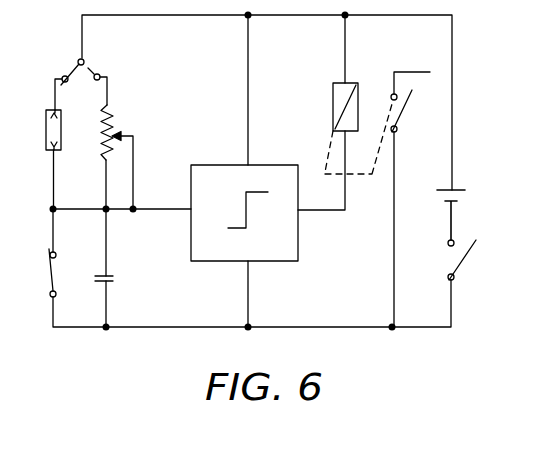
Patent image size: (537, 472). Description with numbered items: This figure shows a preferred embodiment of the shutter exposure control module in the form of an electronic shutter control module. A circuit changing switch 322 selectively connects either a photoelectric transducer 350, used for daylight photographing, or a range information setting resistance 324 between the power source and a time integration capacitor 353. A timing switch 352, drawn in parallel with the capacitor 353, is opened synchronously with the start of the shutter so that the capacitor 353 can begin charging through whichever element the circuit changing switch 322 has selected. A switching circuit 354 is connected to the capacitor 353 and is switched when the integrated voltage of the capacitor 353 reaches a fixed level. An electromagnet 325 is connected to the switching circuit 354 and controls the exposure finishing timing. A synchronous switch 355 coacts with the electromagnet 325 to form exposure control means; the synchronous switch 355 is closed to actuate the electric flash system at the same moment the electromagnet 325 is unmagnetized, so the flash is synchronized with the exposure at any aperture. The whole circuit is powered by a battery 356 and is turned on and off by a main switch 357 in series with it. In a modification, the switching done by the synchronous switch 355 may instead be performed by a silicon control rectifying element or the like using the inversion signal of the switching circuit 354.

The circuit changing switch 322 is at (111, 77).
The photoelectric transducer 350 is at (36, 150).
The range information setting resistance 324 is at (119, 112).
The timing switch 352 is at (46, 264).
The time integration capacitor 353 is at (118, 264).
The switching circuit 354 is at (258, 270).
The electromagnet 325 is at (328, 120).
The synchronous switch 355 is at (400, 103).
The battery 356 is at (467, 180).
The main switch 357 is at (470, 252).